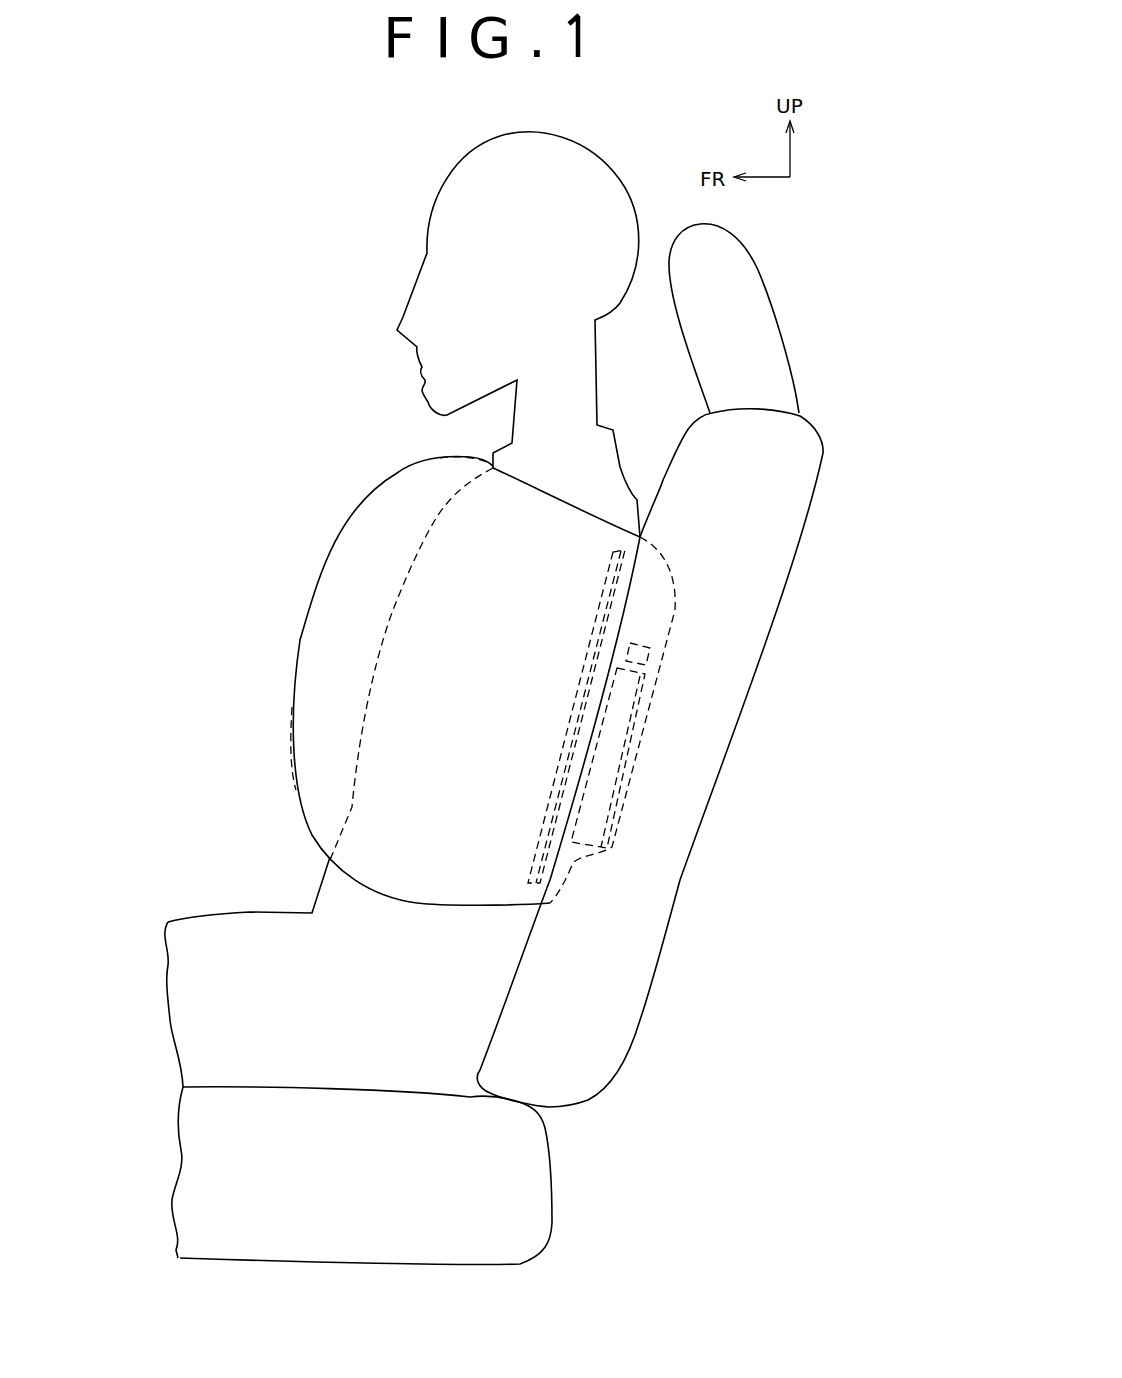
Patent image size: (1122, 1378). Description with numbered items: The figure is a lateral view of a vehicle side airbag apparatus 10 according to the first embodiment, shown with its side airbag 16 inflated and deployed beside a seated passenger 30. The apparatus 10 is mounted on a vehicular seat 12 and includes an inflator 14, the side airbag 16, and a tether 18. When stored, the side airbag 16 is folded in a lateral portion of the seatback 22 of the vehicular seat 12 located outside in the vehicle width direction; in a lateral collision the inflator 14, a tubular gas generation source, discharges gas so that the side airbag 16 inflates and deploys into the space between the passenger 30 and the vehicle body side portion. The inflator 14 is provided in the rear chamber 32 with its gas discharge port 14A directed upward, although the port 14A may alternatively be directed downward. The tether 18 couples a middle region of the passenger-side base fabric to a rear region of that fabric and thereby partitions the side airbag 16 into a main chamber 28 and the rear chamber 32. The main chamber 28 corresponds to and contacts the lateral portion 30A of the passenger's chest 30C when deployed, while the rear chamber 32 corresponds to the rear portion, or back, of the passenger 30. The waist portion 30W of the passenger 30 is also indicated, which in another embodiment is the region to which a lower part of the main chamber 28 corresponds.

The vehicle side airbag apparatus 10 is at (332, 385).
The vehicular seat 12 is at (783, 267).
The inflator 14 is at (602, 779).
The gas discharge port 14A is at (657, 668).
The side airbag 16 is at (263, 615).
The tether 18 is at (601, 600).
The seatback 22 is at (673, 913).
The main chamber 28 is at (330, 745).
The passenger 30 is at (431, 208).
The lateral portion 30A is at (483, 645).
The chest 30C is at (447, 557).
The waist portion 30W is at (393, 1007).
The rear chamber 32 is at (643, 603).